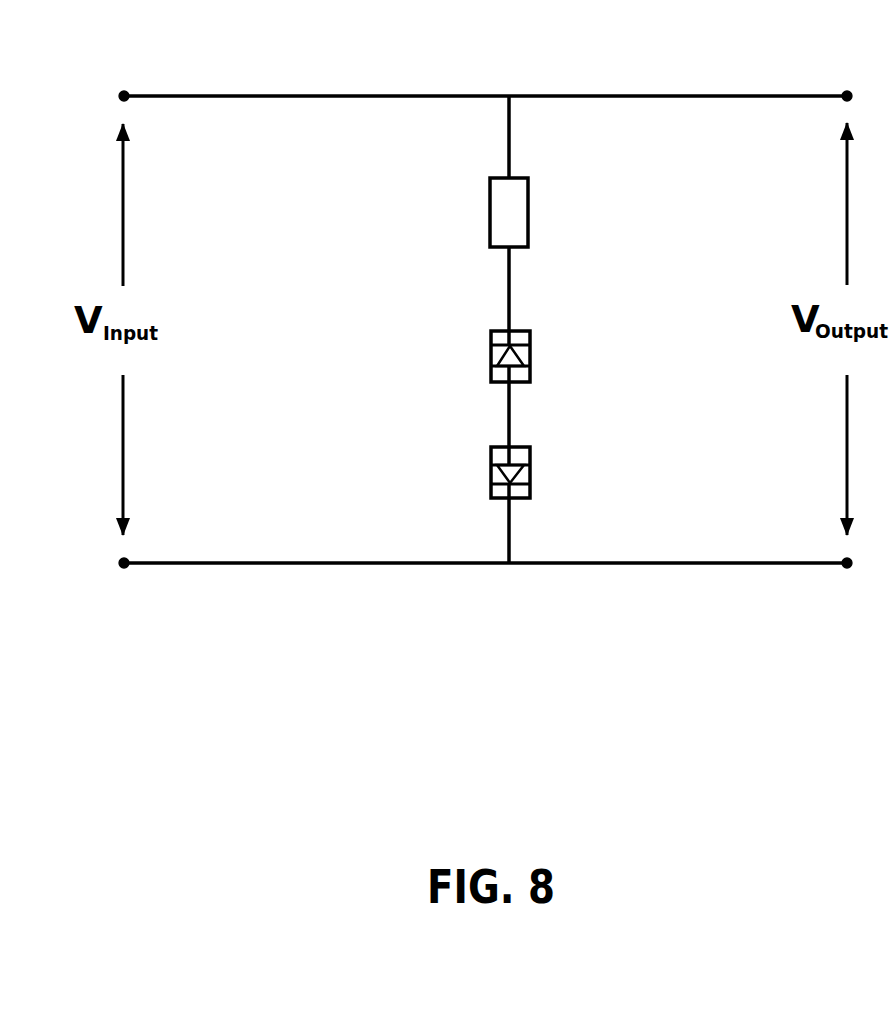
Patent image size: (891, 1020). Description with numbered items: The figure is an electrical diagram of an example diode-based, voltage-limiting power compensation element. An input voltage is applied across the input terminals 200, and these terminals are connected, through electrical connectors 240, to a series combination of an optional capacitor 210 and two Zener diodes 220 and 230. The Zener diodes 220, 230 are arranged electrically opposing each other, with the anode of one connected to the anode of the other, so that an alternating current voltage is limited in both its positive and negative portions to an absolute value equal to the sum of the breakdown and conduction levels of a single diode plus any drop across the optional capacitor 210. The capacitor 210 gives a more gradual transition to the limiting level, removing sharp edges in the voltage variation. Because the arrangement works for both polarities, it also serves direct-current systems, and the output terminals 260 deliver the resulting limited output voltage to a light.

The input terminals 200 is at (312, 78).
The output terminals 260 is at (690, 83).
The electrical connectors 240 is at (503, 143).
The capacitor 210 is at (541, 223).
The Zener diode 220 is at (541, 353).
The Zener diode 230 is at (541, 480).